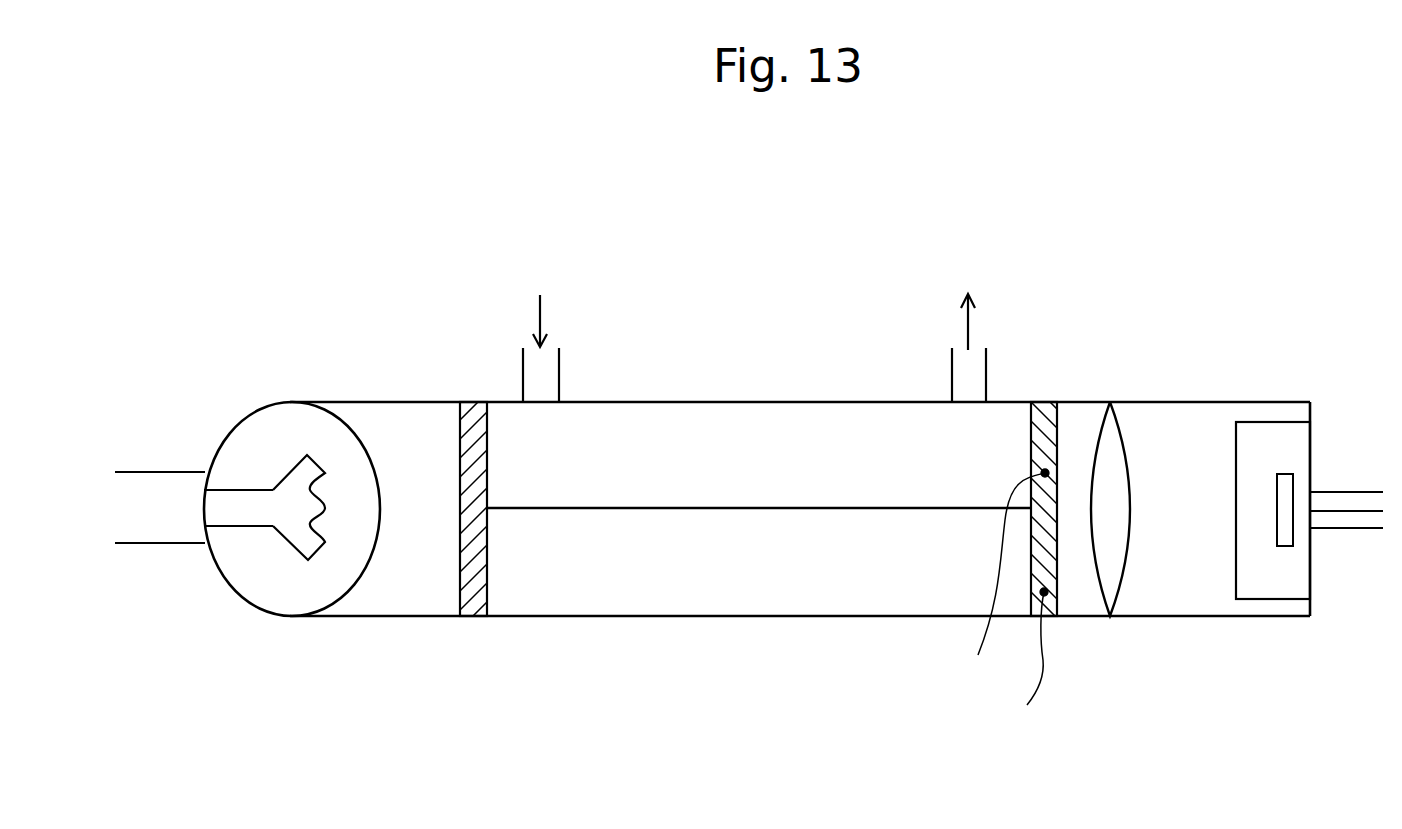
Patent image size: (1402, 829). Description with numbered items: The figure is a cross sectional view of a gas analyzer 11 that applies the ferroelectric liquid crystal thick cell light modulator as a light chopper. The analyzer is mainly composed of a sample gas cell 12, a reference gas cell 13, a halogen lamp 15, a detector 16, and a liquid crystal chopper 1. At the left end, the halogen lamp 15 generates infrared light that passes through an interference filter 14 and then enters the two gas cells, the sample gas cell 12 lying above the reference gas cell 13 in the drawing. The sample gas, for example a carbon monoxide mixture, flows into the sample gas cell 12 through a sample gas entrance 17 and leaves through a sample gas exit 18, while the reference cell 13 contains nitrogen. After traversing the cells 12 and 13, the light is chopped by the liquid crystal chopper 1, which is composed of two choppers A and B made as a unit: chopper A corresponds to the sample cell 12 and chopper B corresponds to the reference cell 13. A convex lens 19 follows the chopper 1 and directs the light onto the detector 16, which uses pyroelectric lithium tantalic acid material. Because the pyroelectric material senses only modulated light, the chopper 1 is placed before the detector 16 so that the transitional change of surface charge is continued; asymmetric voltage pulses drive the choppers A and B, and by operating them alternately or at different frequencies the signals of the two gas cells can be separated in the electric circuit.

The liquid crystal chopper 1 is at (977, 746).
The gas analyzer 11 is at (428, 322).
The sample gas cell 12 is at (762, 424).
The reference gas cell 13 is at (749, 593).
The interference filter 14 is at (475, 592).
The halogen lamp 15 is at (295, 592).
The detector 16 is at (1273, 581).
The sample gas entrance 17 is at (560, 364).
The sample gas exit 18 is at (951, 372).
The convex lens 19 is at (1106, 451).